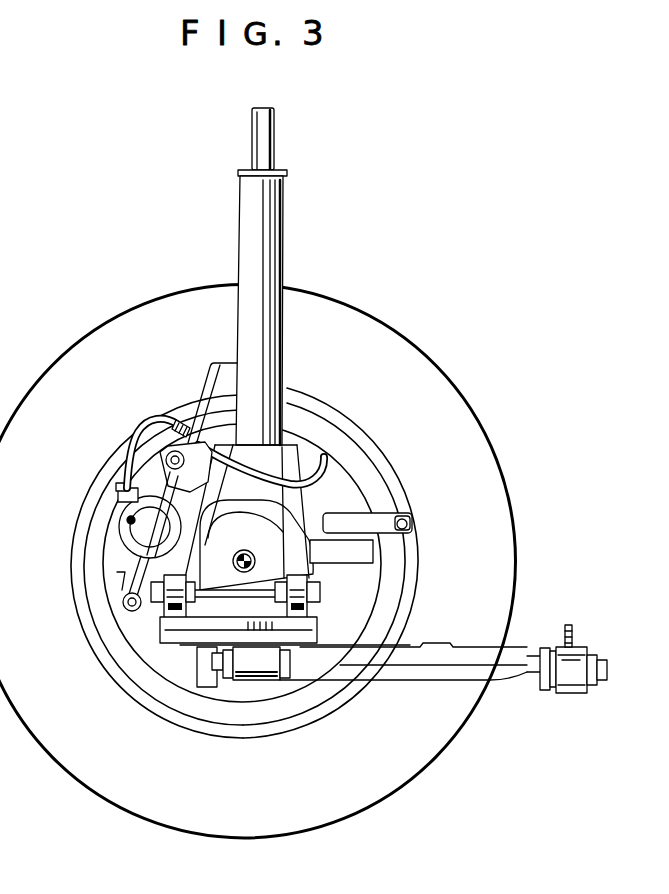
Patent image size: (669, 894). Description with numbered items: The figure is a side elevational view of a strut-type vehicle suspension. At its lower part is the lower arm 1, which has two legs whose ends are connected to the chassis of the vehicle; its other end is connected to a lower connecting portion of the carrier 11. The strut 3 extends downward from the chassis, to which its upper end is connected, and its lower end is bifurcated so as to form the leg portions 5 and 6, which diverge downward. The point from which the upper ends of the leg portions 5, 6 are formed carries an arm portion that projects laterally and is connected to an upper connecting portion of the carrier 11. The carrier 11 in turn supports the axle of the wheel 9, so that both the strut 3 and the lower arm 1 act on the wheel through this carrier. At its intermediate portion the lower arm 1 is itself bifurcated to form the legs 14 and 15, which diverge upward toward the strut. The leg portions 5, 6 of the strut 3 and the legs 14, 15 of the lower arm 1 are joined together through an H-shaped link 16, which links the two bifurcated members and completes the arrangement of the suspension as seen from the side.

The lower arm 1 is at (213, 680).
The strut 3 is at (273, 207).
The leg portion 5 is at (288, 515).
The leg portion 6 is at (207, 508).
The wheel 9 is at (440, 730).
The carrier 11 is at (312, 548).
The leg 14 is at (165, 625).
The leg 15 is at (293, 620).
The H-shaped link 16 is at (208, 597).